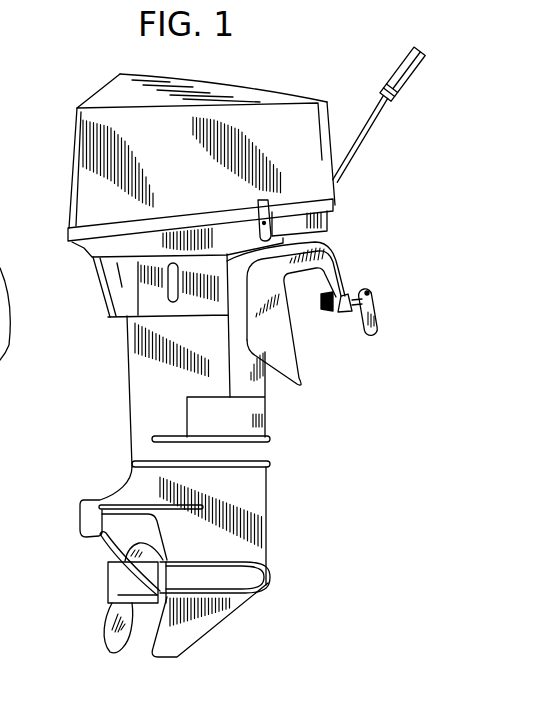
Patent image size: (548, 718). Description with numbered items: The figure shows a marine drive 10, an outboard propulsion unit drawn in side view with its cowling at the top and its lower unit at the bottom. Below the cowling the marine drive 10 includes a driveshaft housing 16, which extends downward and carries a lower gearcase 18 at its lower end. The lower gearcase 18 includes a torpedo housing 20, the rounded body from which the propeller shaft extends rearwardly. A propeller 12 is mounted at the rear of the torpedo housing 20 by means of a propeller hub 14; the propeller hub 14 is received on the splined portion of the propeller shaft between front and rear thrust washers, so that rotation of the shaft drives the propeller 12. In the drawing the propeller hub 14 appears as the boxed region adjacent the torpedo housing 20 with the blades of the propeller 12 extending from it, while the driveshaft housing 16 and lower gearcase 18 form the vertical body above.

The marine drive 10 is at (58, 181).
The propeller 12 is at (102, 640).
The propeller hub 14 is at (115, 579).
The driveshaft housing 16 is at (139, 415).
The lower gearcase 18 is at (262, 497).
The torpedo housing 20 is at (262, 580).